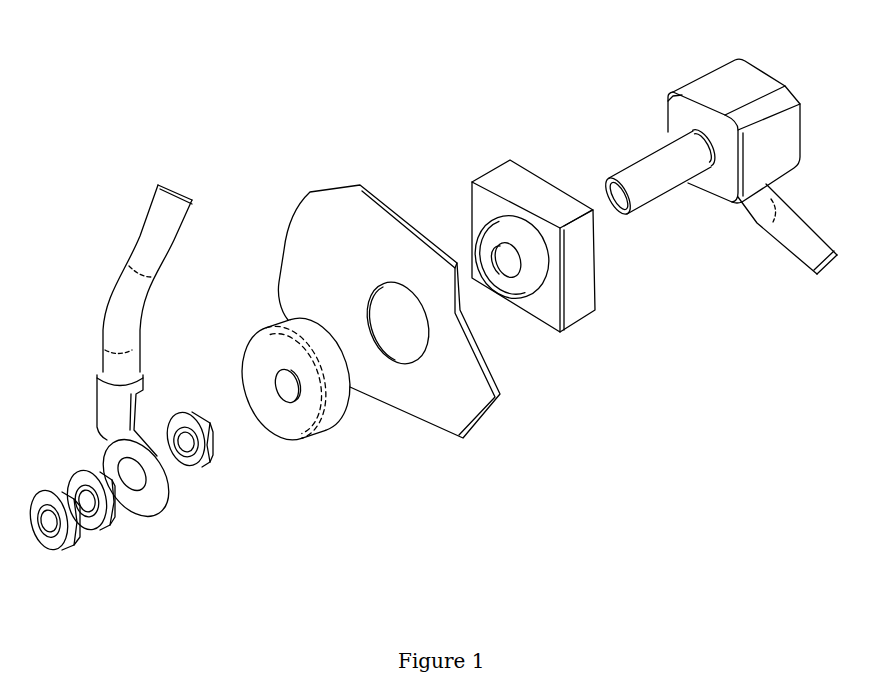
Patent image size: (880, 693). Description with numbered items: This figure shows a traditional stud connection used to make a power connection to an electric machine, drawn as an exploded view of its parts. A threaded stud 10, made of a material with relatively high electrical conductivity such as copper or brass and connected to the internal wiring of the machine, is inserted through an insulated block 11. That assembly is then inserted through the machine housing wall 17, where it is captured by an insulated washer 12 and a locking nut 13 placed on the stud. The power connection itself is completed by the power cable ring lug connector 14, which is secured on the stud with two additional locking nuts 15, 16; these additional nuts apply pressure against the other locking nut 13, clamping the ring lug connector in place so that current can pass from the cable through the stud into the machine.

The threaded stud 10 is at (703, 72).
The insulated block 11 is at (497, 165).
The insulated washer 12 is at (270, 327).
The locking nut 13 is at (207, 466).
The power cable ring lug connector 14 is at (103, 305).
The locking nut 15 is at (110, 527).
The locking nut 16 is at (70, 550).
The machine housing wall 17 is at (313, 192).